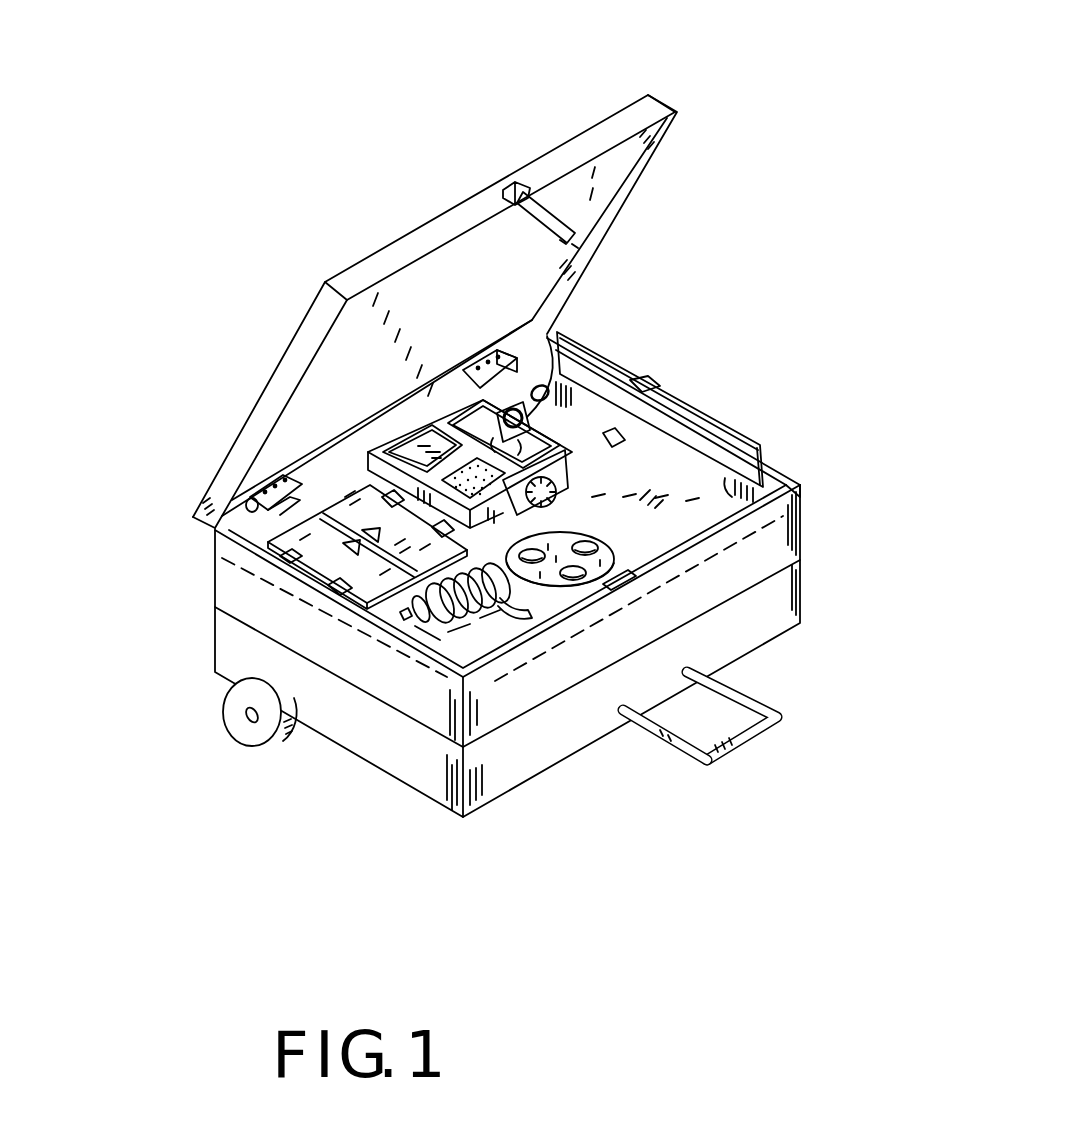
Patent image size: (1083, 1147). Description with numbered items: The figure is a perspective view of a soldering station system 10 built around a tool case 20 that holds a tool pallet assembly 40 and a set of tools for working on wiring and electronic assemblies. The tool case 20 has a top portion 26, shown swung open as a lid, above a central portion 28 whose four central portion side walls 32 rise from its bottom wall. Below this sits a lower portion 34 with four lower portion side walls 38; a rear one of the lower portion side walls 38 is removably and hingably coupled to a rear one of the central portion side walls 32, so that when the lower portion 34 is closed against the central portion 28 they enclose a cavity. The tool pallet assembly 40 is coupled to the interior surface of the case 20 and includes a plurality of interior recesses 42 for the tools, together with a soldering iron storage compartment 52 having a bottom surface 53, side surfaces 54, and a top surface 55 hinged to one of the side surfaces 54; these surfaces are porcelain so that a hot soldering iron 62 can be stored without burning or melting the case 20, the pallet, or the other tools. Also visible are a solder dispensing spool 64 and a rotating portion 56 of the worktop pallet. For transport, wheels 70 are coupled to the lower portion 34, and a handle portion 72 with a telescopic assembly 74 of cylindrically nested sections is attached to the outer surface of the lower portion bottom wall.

The soldering station system 10 is at (322, 188).
The tool case 20 is at (545, 795).
The top portion 26 is at (667, 100).
The central portion 28 is at (195, 580).
The central portion side walls 32 is at (800, 534).
The lower portion 34 is at (195, 652).
The lower portion side walls 38 is at (387, 760).
The tool pallet assembly 40 is at (798, 563).
The interior recesses 42 is at (290, 527).
The soldering iron storage compartment 52 is at (667, 470).
The bottom surface 53 is at (706, 463).
The side surfaces 54 is at (690, 530).
The top surface 55 is at (757, 447).
The rotating portion 56 is at (617, 560).
The soldering iron 62 is at (607, 407).
The solder dispensing spool 64 is at (425, 622).
The wheels 70 is at (227, 730).
The handle portion 72 is at (758, 745).
The telescopic assembly 74 is at (653, 733).